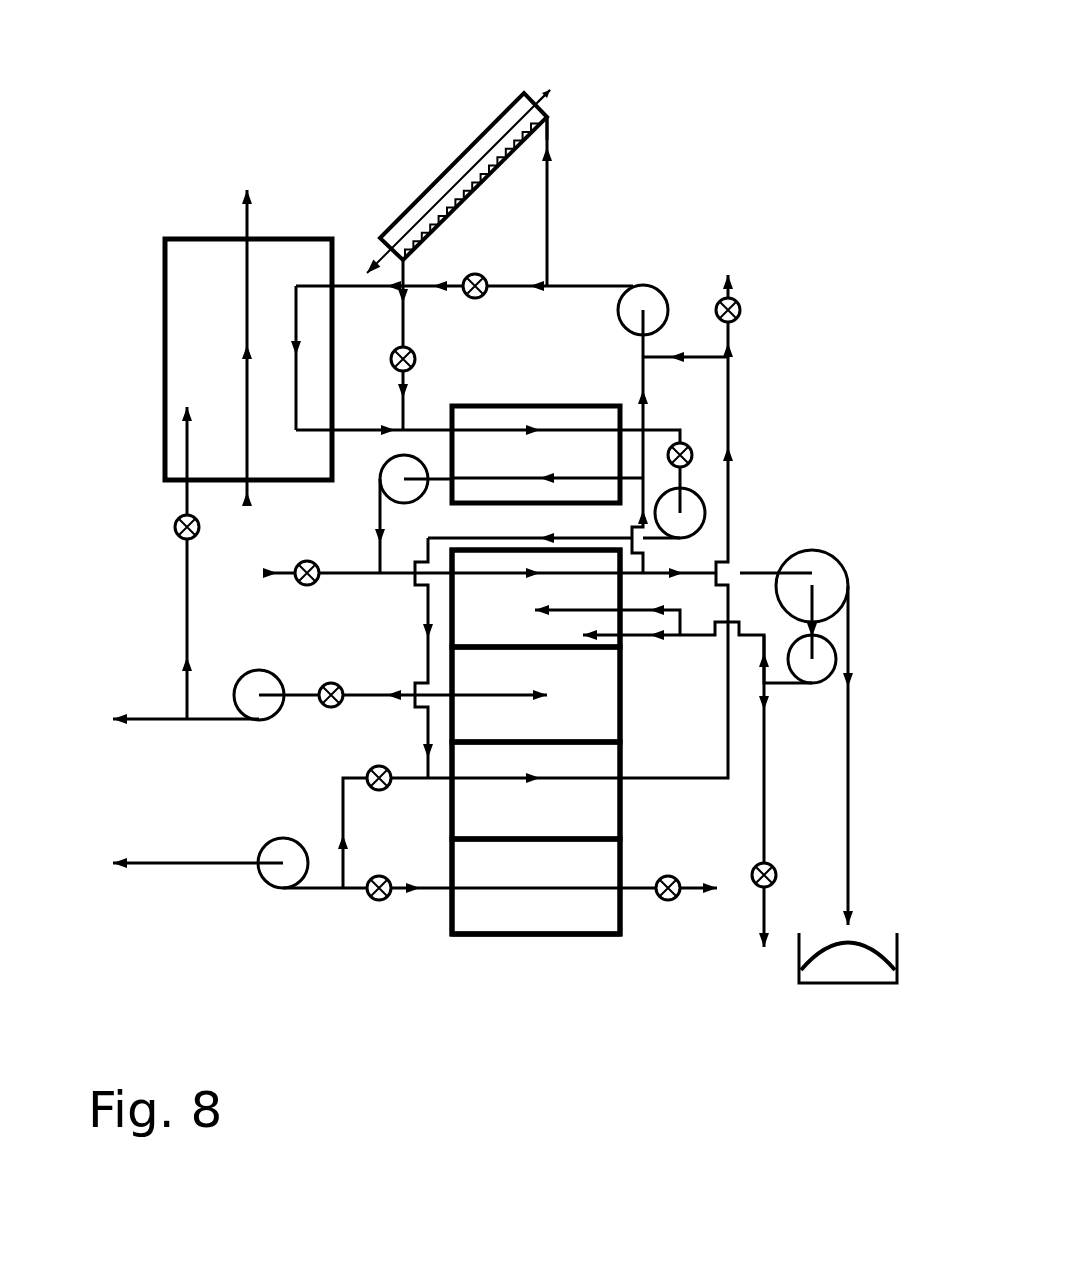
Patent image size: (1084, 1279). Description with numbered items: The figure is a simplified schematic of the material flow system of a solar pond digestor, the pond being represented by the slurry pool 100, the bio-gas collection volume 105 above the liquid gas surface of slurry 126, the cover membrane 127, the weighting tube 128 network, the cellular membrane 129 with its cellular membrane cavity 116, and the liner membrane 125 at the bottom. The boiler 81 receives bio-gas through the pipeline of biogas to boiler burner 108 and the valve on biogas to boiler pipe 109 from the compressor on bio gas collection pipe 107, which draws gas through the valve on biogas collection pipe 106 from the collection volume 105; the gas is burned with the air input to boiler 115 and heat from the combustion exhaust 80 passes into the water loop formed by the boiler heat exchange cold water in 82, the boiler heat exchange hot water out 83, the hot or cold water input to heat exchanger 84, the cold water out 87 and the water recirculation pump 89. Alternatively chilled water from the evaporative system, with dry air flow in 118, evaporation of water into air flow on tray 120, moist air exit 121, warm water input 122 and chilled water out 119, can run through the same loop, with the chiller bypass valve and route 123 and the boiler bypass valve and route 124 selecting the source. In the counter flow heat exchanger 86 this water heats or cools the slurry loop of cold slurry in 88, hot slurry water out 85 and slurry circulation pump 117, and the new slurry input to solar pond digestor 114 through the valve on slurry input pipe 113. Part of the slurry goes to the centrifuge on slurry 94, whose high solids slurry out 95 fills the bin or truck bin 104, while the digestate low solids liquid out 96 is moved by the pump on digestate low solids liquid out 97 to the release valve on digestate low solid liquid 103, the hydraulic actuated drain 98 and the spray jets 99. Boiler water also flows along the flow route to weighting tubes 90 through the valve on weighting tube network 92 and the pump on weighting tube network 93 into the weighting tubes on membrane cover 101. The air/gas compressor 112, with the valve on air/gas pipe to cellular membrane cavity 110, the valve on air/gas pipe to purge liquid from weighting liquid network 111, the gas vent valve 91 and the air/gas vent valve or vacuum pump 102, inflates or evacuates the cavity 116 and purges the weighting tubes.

The combustion exhaust 80 is at (243, 205).
The boiler 81 is at (293, 232).
The boiler heat exchange cold water in 82 is at (350, 283).
The boiler heat exchange hot water out 83 is at (332, 426).
The hot or cold water input to heat exchanger 84 is at (395, 456).
The hot slurry water out 85 is at (553, 300).
The counter flow heat exchanger 86 is at (588, 290).
The cold water out 87 is at (598, 405).
The cold slurry in 88 is at (633, 477).
The water recirculation pump 89 is at (636, 283).
The flow route to weighting tubes 90 is at (682, 418).
The gas vent valve 91 is at (740, 312).
The valve on weighting tube network 92 is at (694, 460).
The pump on weighting tube network 93 is at (706, 513).
The centrifuge on slurry 94 is at (828, 557).
The high solids slurry out 95 is at (850, 608).
The digestate low solids liquid out 96 is at (815, 608).
The pump on digestate low solids liquid out 97 is at (832, 648).
The hydraulic actuated drain 98 is at (603, 612).
The spray jets 99 is at (575, 640).
The slurry pool 100 is at (605, 660).
The weighting tubes on membrane cover 101 is at (482, 817).
The air/gas vent valve or vacuum pump on cellular membrane cover 102 is at (668, 900).
The release valve on digestate low solid liquid to fertilize farms 103 is at (772, 880).
The bin or truck bin for delivery of solid digestate 104 is at (899, 950).
The bio-gas collection volume between slurry and cover 105 is at (503, 673).
The valve on biogas collection pipe 106 is at (331, 708).
The compressor on bio gas collection pipe 107 is at (258, 725).
The pipeline of biogas to boiler burner 108 is at (183, 688).
The valve on biogas to boiler pipe 109 is at (176, 529).
The valve on air/gas pipe to cellular membrane cavity 110 is at (376, 900).
The valve on air/gas pipe to purge liquid from weighting liquid network 111 is at (365, 770).
The air/gas compressor 112 is at (270, 883).
The valve on slurry input pipe 113 is at (307, 586).
The slurry input to solar pond digestor 114 is at (260, 575).
The air input to boiler 115 is at (243, 494).
The cellular membrane cavity 116 is at (598, 910).
The slurry circulation pump 117 is at (183, 405).
The dry air flow in 118 is at (369, 262).
The chilled water out 119 is at (473, 177).
The evaporation of water into air flow on tray 120 is at (415, 205).
The moist air exit 121 is at (546, 95).
The warm water input 122 is at (549, 118).
The chiller bypass valve and route 123 is at (465, 292).
The boiler bypass valve and route 124 is at (393, 357).
The liner membrane 125 is at (560, 628).
The liquid gas surface of slurry 126 is at (517, 553).
The cover membrane 127 is at (510, 648).
The weighting tube 128 is at (523, 840).
The cellular membrane 129 is at (497, 935).